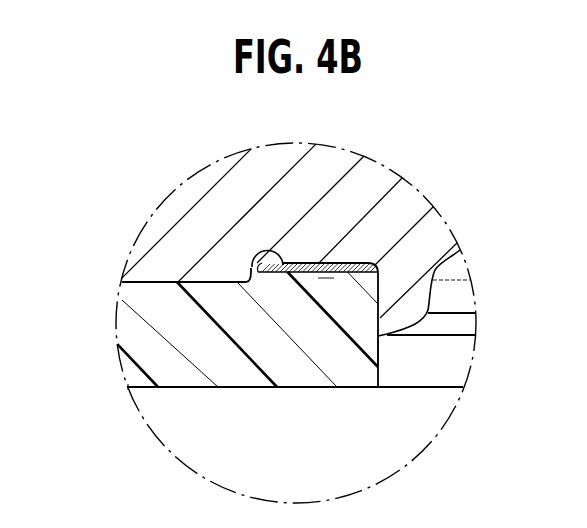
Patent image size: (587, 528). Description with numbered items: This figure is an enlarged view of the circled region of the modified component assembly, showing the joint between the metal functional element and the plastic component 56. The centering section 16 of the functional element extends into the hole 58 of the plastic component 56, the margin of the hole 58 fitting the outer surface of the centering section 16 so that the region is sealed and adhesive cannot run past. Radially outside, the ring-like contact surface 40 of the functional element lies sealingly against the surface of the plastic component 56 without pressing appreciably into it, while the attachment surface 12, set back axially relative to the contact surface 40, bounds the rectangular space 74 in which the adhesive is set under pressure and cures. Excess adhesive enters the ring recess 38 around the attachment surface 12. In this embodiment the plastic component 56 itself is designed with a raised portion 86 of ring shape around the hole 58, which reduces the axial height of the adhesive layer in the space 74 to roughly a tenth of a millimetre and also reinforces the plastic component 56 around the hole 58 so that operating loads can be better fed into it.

The attachment surface 12 is at (378, 278).
The centering section 16 is at (379, 337).
The ring recess 38 is at (262, 253).
The contact surface 40 is at (190, 294).
The plastic component 56 is at (193, 389).
The hole 58 is at (380, 345).
The rectangular space 74 is at (336, 268).
The raised portion 86 is at (328, 276).